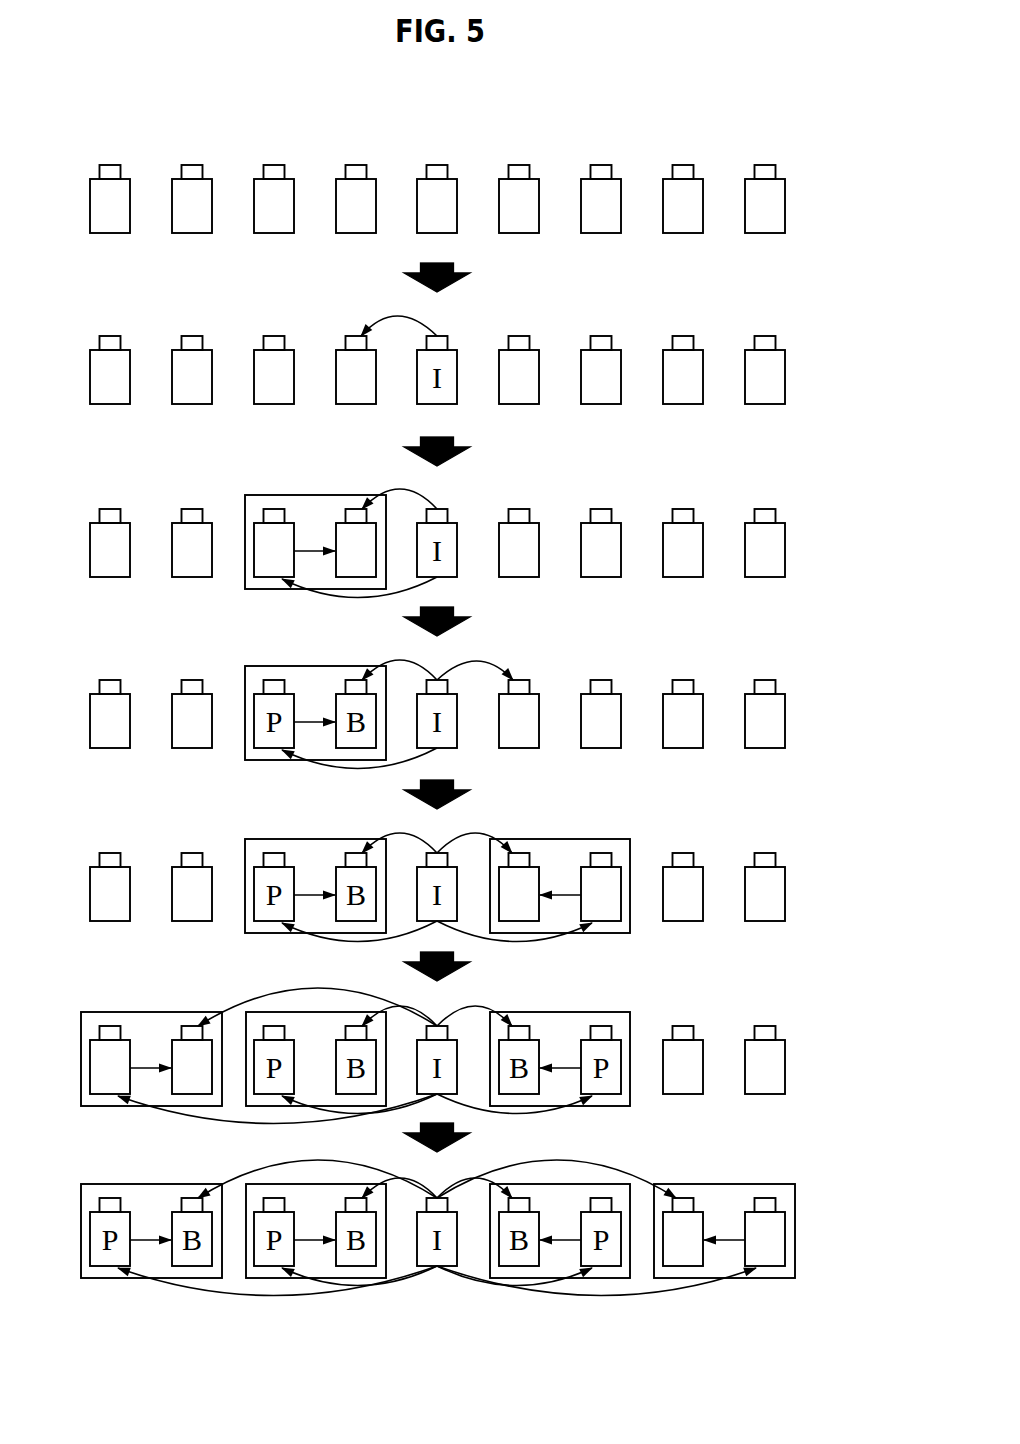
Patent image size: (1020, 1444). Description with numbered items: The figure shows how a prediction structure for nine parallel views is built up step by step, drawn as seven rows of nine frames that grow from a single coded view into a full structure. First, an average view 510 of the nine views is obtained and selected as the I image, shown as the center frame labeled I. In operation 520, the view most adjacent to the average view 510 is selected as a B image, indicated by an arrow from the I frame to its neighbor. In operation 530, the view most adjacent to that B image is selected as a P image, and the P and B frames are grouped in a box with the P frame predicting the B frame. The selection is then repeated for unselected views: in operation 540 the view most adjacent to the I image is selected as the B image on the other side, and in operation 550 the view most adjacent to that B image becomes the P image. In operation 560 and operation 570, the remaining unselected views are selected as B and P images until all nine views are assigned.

The average view 510 is at (437, 164).
The operation of selecting a B image 520 is at (390, 318).
The operation of selecting a P image 530 is at (345, 598).
The operation of selecting the B image from unselected views 540 is at (482, 660).
The operation of selecting the P image from unselected views 550 is at (535, 940).
The operation of selecting unselected views as B and P images 560 is at (230, 1122).
The operation of selecting remaining unselected views as B and P images 570 is at (630, 1293).